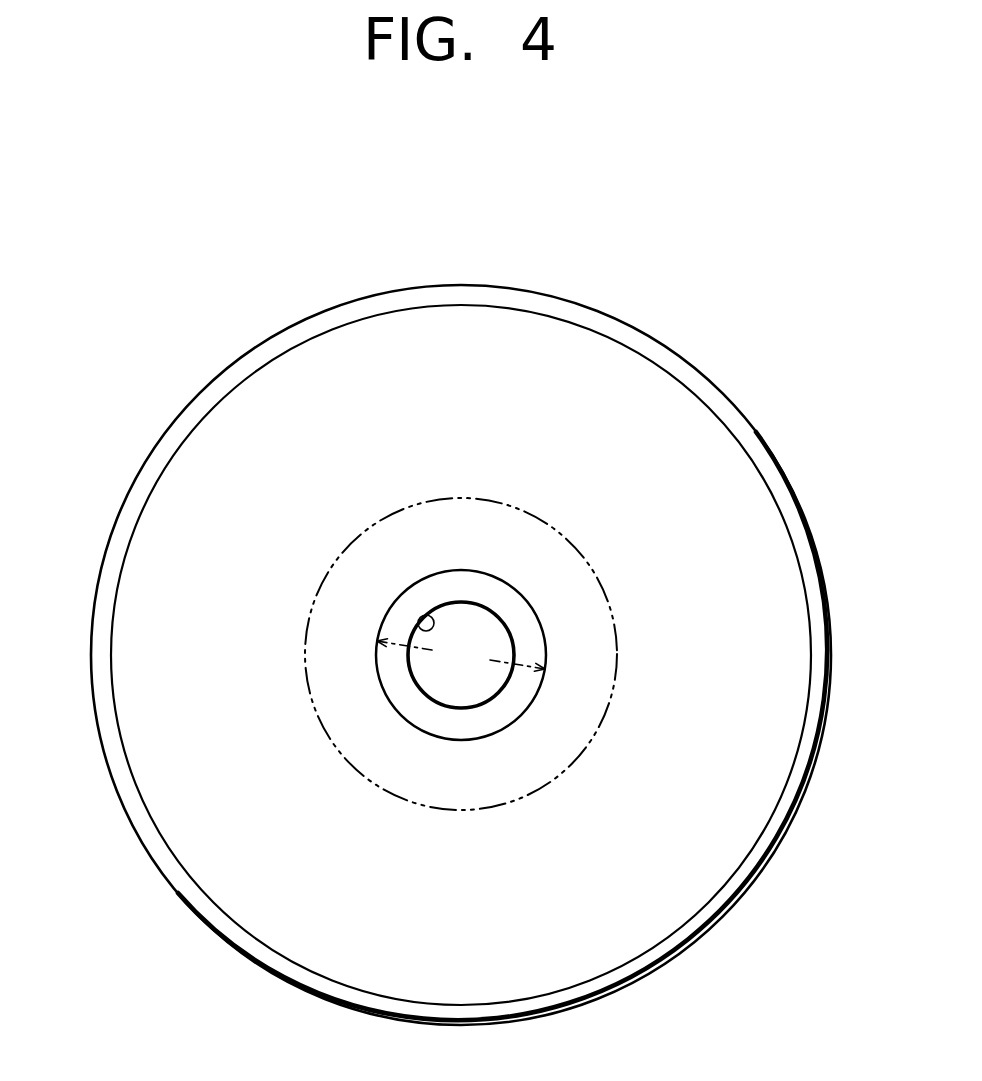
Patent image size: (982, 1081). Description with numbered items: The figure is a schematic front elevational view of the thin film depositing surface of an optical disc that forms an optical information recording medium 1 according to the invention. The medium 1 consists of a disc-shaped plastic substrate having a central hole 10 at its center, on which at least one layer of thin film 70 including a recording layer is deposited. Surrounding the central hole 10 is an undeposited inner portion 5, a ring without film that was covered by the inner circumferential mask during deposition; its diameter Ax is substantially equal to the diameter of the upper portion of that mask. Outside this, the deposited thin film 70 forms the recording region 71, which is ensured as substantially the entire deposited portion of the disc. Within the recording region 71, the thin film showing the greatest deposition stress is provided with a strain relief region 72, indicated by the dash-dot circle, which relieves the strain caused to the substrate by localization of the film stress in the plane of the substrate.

The optical information recording medium 1 is at (763, 432).
The thin film 70 is at (607, 397).
The recording region 71 is at (770, 603).
The strain relief region 72 is at (577, 708).
The undeposited inner portion 5 is at (420, 718).
The central hole 10 is at (413, 630).